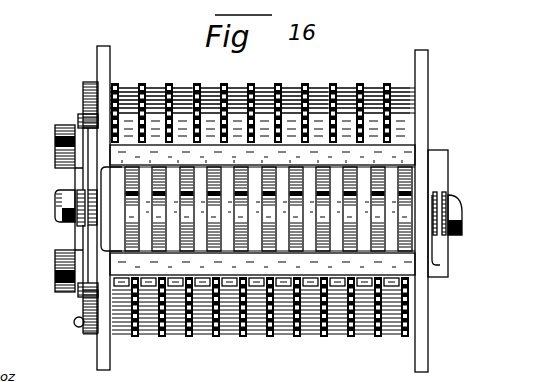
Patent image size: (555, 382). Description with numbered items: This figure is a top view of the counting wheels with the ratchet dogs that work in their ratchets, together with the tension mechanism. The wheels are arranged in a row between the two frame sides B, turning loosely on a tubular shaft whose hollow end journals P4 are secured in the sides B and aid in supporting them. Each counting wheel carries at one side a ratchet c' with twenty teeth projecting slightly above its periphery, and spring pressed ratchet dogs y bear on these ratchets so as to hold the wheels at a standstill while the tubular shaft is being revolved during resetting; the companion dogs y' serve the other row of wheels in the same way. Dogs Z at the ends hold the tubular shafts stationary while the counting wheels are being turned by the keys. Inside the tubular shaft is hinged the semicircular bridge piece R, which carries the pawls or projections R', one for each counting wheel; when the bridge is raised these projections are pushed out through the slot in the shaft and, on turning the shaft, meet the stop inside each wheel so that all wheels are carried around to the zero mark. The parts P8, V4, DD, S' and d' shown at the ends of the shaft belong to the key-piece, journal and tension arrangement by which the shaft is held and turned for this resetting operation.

The sides B is at (104, 368).
The semicircular bridge piece R is at (262, 102).
The upper gear wheel S' is at (262, 105).
The ratchet dogs y is at (262, 160).
The lower guide strip y' is at (262, 264).
The ratchet c' is at (260, 317).
The dogs Z is at (84, 102).
The hollow end journals P4 is at (80, 121).
The pinion P8 is at (55, 135).
The gear wheel V4 is at (55, 151).
The drive wheel DD is at (56, 208).
The pawls or projections R' is at (46, 374).
The bracket d' is at (445, 216).